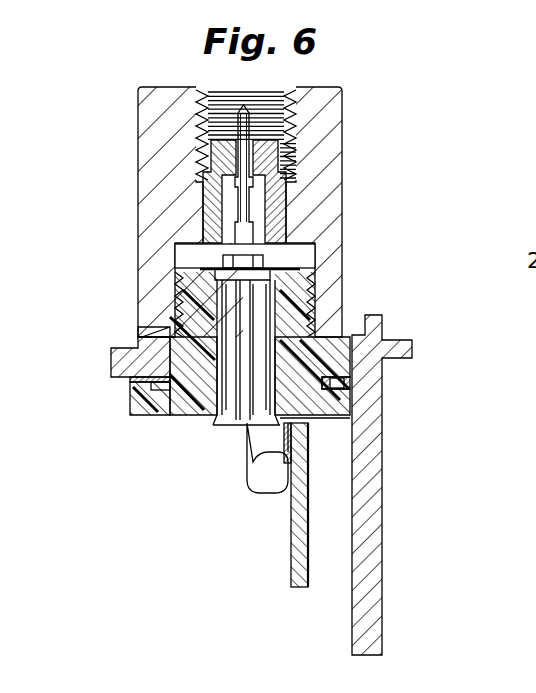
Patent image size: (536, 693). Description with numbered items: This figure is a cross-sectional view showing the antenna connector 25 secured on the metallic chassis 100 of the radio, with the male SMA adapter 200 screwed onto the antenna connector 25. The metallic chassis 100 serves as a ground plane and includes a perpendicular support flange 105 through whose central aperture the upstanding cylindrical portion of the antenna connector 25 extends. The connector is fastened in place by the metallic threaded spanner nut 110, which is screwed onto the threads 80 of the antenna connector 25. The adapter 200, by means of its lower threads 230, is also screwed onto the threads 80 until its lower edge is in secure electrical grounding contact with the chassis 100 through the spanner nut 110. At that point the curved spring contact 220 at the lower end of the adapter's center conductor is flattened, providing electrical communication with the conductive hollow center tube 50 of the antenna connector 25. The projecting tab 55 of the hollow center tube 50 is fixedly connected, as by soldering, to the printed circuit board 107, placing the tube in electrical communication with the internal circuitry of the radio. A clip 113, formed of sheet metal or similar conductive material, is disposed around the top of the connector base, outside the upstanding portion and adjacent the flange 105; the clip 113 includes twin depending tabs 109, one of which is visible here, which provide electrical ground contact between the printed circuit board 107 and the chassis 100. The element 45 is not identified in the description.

The male SMA adapter 200 is at (338, 138).
The spring contact 220 is at (250, 104).
The lower threads 230 is at (318, 284).
The threads 80 is at (168, 286).
The spanner nut 110 is at (148, 330).
The support flange 105 is at (118, 372).
The clip 113 is at (130, 380).
The antenna connector 25 is at (128, 410).
The hollow center tube 50 is at (215, 378).
The inner conductor 45 is at (240, 418).
The projecting tab 55 is at (264, 470).
The depending tabs 109 is at (265, 493).
The printed circuit board 107 is at (300, 588).
The metallic chassis 100 is at (387, 575).